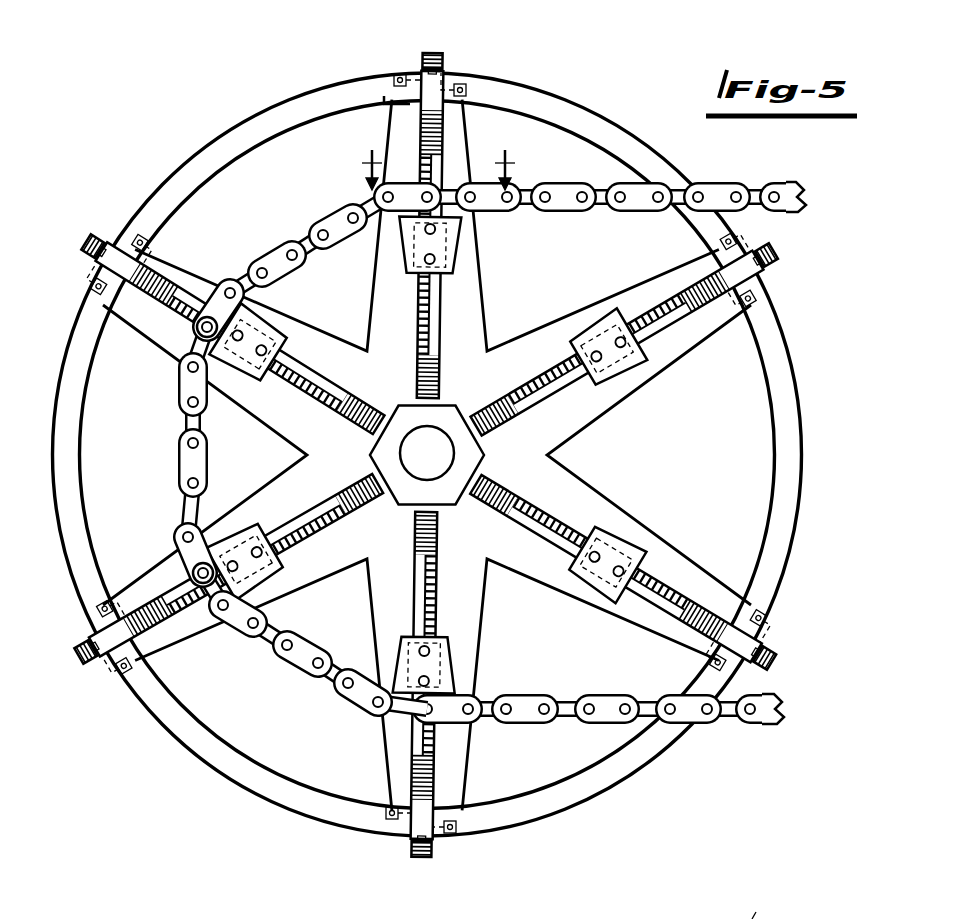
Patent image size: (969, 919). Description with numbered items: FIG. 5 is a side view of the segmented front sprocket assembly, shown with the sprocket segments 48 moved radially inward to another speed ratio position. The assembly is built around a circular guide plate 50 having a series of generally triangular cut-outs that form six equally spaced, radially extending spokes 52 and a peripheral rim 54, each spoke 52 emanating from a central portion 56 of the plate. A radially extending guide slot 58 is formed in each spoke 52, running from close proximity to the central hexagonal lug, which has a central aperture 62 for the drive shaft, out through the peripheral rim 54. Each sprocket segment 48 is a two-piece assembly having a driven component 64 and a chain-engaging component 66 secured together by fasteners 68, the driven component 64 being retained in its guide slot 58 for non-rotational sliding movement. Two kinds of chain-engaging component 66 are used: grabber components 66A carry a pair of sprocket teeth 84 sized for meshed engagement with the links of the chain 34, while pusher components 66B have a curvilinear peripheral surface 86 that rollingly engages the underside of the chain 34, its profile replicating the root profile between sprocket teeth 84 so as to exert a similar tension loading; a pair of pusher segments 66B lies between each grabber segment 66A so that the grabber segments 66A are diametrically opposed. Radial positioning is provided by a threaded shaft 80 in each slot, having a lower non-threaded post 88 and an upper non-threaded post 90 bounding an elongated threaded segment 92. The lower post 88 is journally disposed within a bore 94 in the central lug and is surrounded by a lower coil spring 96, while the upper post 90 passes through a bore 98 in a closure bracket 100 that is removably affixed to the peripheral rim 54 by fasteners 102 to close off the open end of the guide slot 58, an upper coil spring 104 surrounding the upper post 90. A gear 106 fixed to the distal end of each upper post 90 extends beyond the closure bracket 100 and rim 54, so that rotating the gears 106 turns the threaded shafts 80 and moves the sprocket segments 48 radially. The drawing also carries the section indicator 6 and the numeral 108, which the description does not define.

The chain 34 is at (758, 728).
The sprocket segment 48 is at (458, 251).
The circular guide plate 50 is at (800, 387).
The spokes 52 is at (485, 345).
The peripheral rim 54 is at (592, 118).
The central portion 56 is at (372, 373).
The guide slot 58 is at (452, 632).
The central aperture 62 is at (441, 414).
The driven component 64 is at (632, 532).
The chain-engaging component 66 is at (610, 533).
The grabber component 66A is at (470, 222).
The pusher component 66B is at (330, 302).
The fasteners 68 is at (607, 564).
The threaded shaft 80 is at (412, 322).
The sprocket teeth 84 is at (386, 214).
The curvilinear peripheral surface 86 is at (614, 318).
The lower non-threaded post 88 is at (414, 505).
The upper non-threaded post 90 is at (470, 808).
The threaded segment 92 is at (432, 560).
The bore 94 is at (350, 442).
The lower coil spring 96 is at (436, 545).
The bore 98 is at (421, 60).
The closure bracket 100 is at (130, 228).
The fasteners 102 is at (394, 78).
The upper coil spring 104 is at (386, 100).
The gear 106 is at (438, 50).
The support 108 is at (779, 908).
The section line 6 is at (435, 157).